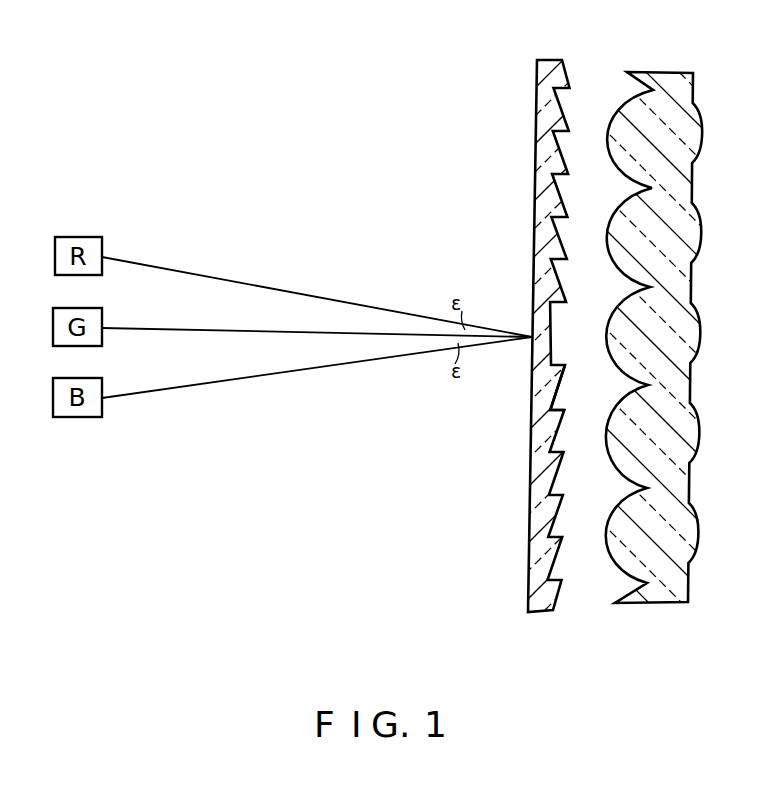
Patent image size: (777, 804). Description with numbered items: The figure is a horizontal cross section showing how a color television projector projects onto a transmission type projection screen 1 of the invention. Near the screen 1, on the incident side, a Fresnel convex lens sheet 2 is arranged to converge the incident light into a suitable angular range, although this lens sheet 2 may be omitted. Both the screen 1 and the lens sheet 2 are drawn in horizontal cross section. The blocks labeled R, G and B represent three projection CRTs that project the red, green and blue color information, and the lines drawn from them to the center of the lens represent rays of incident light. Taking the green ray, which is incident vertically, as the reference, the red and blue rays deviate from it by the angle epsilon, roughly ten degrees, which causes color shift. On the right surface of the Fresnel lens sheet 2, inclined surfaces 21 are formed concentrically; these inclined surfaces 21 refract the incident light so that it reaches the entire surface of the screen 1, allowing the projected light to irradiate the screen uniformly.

The transmission type projection screen 1 is at (667, 83).
The Fresnel convex lens sheet 2 is at (548, 67).
The inclined surfaces 21 is at (555, 393).